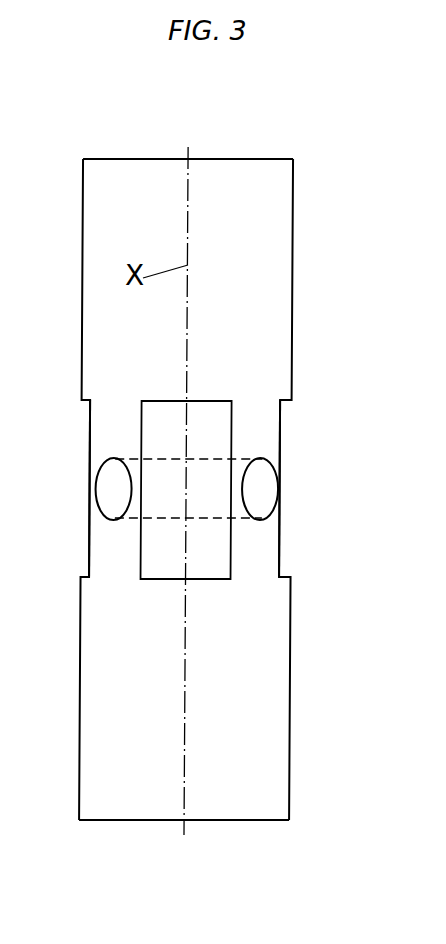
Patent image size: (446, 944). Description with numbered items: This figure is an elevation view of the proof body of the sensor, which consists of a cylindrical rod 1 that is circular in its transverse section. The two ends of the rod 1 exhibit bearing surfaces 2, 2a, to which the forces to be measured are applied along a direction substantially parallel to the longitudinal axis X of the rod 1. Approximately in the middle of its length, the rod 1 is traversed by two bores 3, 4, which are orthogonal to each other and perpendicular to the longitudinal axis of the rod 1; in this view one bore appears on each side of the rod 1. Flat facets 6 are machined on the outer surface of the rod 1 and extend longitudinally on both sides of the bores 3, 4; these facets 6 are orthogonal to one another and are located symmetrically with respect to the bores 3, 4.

The cylindrical rod 1 is at (245, 265).
The bearing surface 2 is at (247, 155).
The bearing surface 2a is at (126, 831).
The bore 3 is at (255, 490).
The bore 4 is at (108, 490).
The flat facet 6 is at (293, 432).